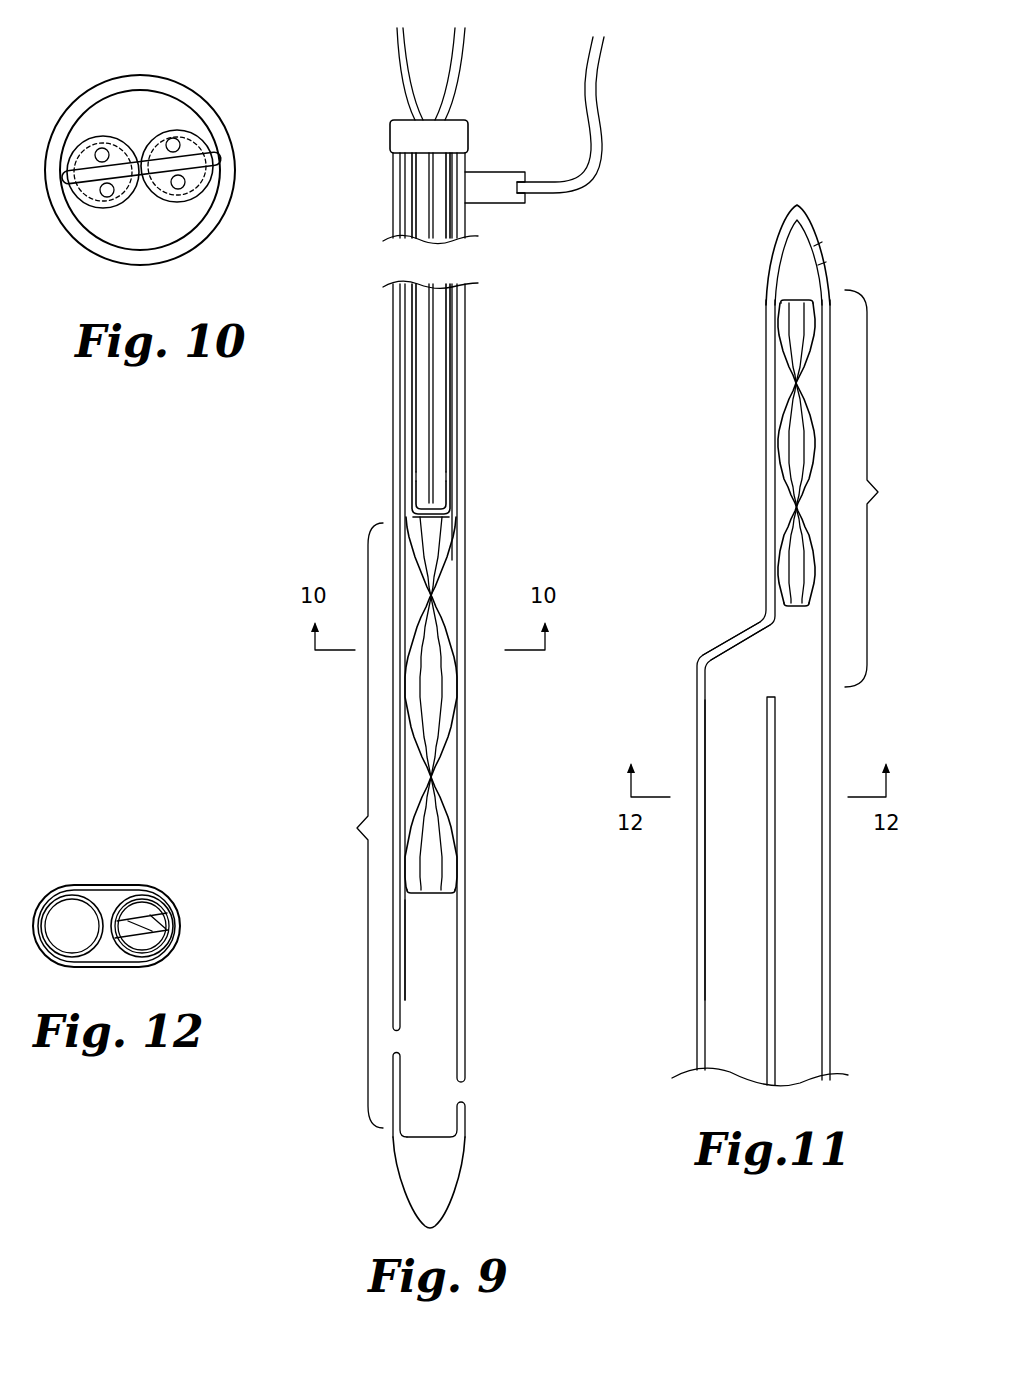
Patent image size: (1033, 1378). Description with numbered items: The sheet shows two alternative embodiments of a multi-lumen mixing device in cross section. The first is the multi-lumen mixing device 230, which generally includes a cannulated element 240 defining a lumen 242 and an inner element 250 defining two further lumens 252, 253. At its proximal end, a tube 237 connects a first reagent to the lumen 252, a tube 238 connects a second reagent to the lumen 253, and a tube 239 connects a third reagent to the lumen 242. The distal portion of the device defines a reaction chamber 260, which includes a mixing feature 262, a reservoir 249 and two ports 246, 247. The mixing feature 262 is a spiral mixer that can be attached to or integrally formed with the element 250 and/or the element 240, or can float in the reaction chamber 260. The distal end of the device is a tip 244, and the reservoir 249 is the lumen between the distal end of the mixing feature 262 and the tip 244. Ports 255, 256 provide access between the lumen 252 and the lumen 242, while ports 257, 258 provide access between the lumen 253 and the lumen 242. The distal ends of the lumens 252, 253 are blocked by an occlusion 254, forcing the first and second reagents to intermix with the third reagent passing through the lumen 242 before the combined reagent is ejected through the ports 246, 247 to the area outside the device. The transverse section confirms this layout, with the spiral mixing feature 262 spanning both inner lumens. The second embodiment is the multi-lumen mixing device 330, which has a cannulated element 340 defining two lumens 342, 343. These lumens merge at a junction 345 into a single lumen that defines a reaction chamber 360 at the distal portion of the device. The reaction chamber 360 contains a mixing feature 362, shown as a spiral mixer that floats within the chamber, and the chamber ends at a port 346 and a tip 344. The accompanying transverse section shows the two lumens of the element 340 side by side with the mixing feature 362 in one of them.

In FIG. 9, the multi-lumen mixing device 230 is at (334, 552).
In FIG. 9, the tube 237 is at (407, 60).
In FIG. 9, the tube 238 is at (452, 72).
In FIG. 9, the tube 239 is at (597, 88).
In FIG. 10, the cannulated element 240 is at (148, 73).
In FIG. 9, the cannulated element 240 is at (393, 392).
In FIG. 9, the lumen 242 is at (408, 427).
In FIG. 9, the tip 244 is at (437, 1170).
In FIG. 9, the port 246 is at (398, 1038).
In FIG. 9, the port 247 is at (465, 1087).
In FIG. 9, the reservoir 249 is at (437, 932).
In FIG. 10, the element 250 is at (115, 218).
In FIG. 9, the element 250 is at (452, 368).
In FIG. 9, the lumen 252 is at (422, 333).
In FIG. 9, the lumen 253 is at (440, 342).
In FIG. 9, the occlusion 254 is at (430, 517).
In FIG. 10, the port 255 is at (83, 140).
In FIG. 9, the port 255 is at (416, 480).
In FIG. 10, the port 256 is at (92, 197).
In FIG. 10, the port 257 is at (173, 135).
In FIG. 9, the port 257 is at (448, 477).
In FIG. 10, the port 258 is at (182, 182).
In FIG. 9, the reaction chamber 260 is at (346, 825).
In FIG. 10, the mixing feature 262 is at (122, 147).
In FIG. 9, the mixing feature 262 is at (433, 693).
In FIG. 11, the multi-lumen mixing device 330 is at (853, 220).
In FIG. 11, the cannulated element 340 is at (825, 925).
In FIG. 11, the lumen 342 is at (797, 993).
In FIG. 11, the lumen 343 is at (728, 990).
In FIG. 11, the tip 344 is at (797, 203).
In FIG. 11, the junction 345 is at (762, 663).
In FIG. 11, the port 346 is at (823, 248).
In FIG. 11, the reaction chamber 360 is at (889, 488).
In FIG. 11, the mixing feature 362 is at (785, 433).